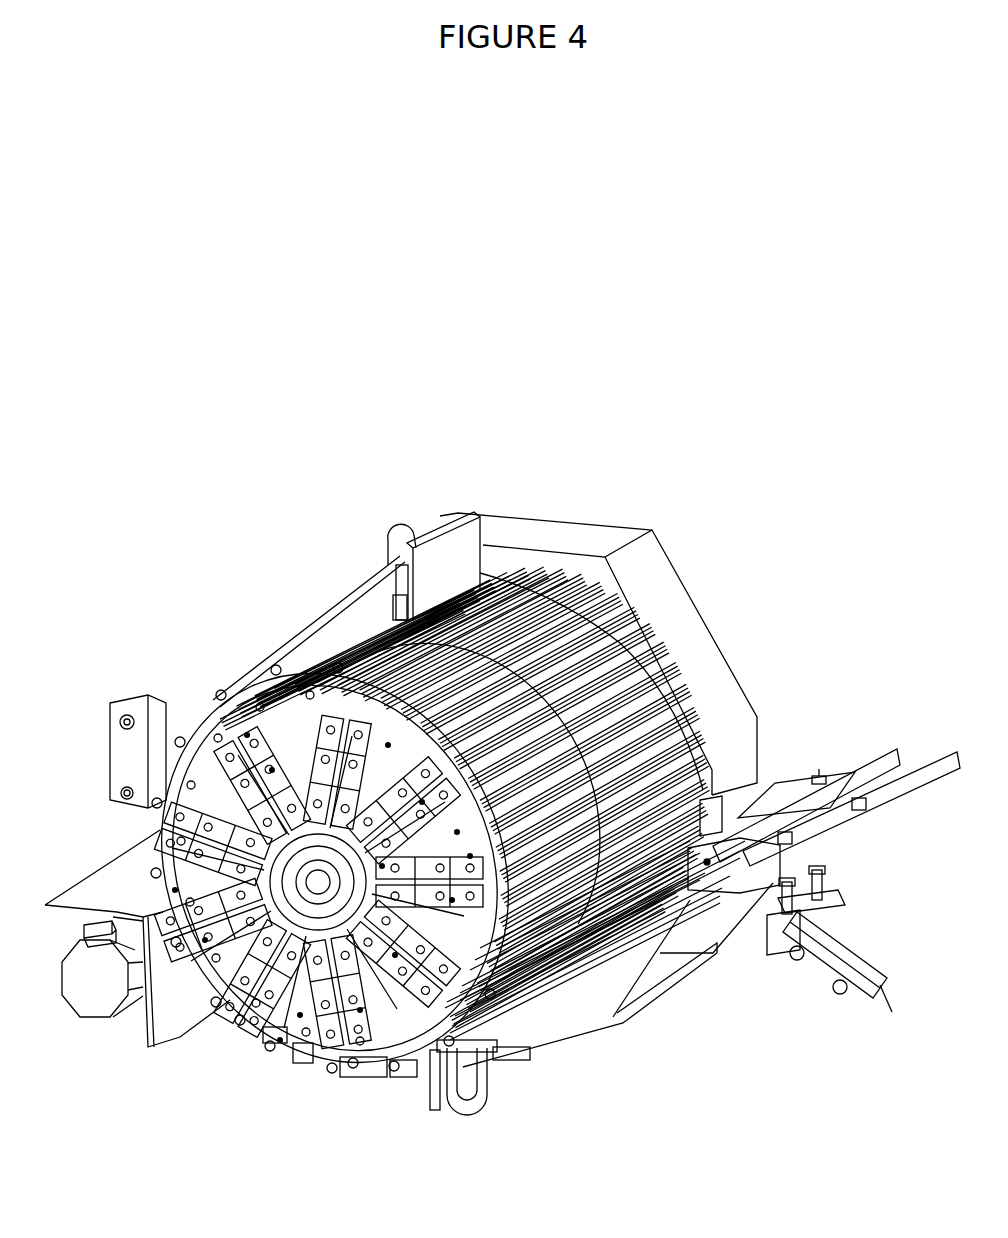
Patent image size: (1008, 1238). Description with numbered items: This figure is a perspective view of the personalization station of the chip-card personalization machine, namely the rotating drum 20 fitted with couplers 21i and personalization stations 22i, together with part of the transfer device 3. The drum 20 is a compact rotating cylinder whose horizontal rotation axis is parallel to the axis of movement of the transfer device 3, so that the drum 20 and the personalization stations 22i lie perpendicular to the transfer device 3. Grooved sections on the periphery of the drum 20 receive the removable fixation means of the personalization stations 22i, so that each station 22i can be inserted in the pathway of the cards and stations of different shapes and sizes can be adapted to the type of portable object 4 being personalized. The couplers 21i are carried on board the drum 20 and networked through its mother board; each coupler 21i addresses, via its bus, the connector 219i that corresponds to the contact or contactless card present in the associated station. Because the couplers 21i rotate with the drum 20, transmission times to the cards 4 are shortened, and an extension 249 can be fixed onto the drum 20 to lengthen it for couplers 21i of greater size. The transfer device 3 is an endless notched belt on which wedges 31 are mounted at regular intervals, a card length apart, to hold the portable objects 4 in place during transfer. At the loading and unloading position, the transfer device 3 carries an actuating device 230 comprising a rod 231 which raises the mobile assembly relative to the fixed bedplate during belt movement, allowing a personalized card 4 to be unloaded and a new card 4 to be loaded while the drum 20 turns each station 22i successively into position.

The transfer device 3 is at (873, 752).
The portable object 4 is at (767, 795).
The rotating drum 20 is at (625, 652).
The couplers 21i is at (322, 985).
The personalization stations 22i is at (435, 535).
The wedges 31 is at (822, 778).
The connector 219i is at (270, 995).
The actuating device 230 is at (820, 978).
The rod 231 is at (762, 893).
The extension 249 is at (272, 655).